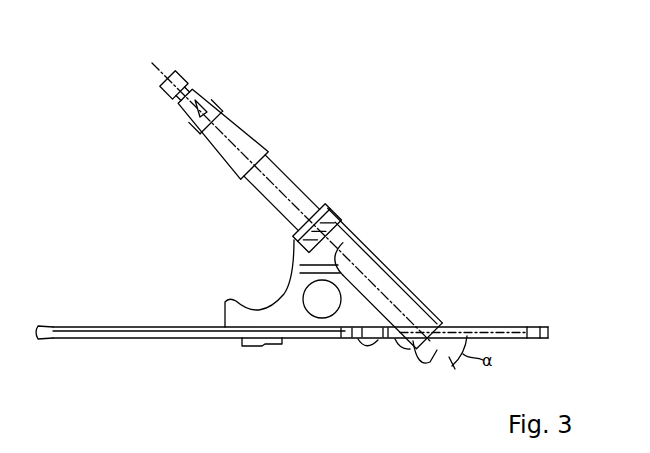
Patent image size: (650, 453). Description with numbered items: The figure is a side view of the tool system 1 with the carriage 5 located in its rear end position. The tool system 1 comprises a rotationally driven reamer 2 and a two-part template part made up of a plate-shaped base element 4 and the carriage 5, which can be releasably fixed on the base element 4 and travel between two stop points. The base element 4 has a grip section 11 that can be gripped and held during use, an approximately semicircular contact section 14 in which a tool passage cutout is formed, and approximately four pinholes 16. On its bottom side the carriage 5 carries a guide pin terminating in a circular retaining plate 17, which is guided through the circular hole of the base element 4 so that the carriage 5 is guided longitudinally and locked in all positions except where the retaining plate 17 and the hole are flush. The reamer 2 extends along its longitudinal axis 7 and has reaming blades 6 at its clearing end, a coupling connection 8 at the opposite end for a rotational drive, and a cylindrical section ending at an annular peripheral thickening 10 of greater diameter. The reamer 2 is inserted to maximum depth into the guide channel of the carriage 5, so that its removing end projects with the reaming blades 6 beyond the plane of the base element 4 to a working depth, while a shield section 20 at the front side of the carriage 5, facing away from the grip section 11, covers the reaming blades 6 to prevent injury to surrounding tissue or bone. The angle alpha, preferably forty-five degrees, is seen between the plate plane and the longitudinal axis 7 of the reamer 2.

The tool system 1 is at (88, 189).
The reamer 2 is at (307, 174).
The base element 4 is at (155, 320).
The carriage 5 is at (287, 290).
The reaming blades 6 is at (412, 353).
The longitudinal axis 7 is at (152, 63).
The coupling connection 8 is at (224, 91).
The annular peripheral thickening 10 is at (322, 215).
The grip section 11 is at (100, 339).
The contact section 14 is at (521, 324).
The pinholes 16 is at (385, 339).
The retaining plate 17 is at (250, 348).
The shield section 20 is at (418, 302).